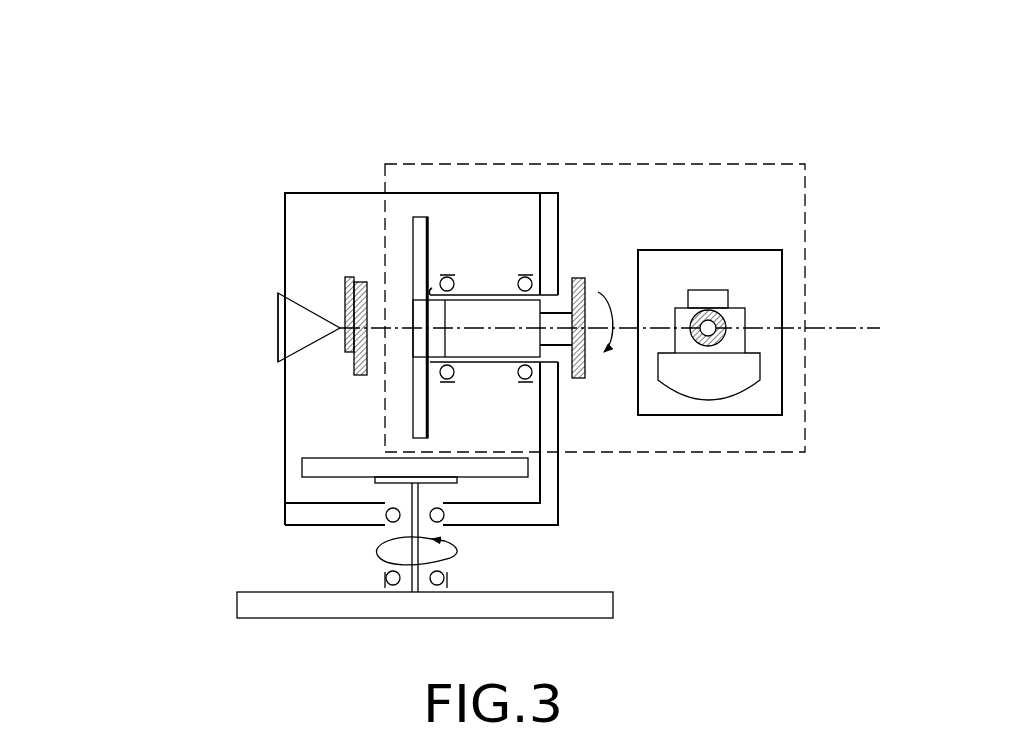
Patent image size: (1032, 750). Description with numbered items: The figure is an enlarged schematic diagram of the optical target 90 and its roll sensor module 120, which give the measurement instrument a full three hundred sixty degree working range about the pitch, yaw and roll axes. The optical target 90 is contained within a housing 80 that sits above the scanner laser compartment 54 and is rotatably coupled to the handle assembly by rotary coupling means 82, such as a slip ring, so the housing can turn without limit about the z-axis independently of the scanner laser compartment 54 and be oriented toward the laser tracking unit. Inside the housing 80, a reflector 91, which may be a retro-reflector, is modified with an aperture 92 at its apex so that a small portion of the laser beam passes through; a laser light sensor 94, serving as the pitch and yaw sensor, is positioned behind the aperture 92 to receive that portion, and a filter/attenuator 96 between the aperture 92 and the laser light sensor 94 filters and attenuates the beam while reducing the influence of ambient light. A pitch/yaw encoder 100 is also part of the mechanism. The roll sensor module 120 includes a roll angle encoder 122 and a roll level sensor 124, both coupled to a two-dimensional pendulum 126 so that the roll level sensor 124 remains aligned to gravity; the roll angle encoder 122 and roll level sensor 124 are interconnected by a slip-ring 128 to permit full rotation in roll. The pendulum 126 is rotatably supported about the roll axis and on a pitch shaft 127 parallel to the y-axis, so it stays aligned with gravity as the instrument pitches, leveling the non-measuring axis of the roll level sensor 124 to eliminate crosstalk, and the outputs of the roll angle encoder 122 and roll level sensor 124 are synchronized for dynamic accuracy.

The scanner laser compartment 54 is at (237, 600).
The housing 80 is at (520, 193).
The rotary coupling means 82 is at (500, 555).
The optical target 90 is at (178, 335).
The reflector 91 is at (277, 327).
The aperture 92 is at (340, 327).
The laser light sensor 94 is at (362, 282).
The filter/attenuator 96 is at (341, 322).
The pitch/yaw encoder 100 is at (310, 458).
The roll sensor module 120 is at (675, 164).
The roll angle encoder 122 is at (420, 217).
The roll level sensor 124 is at (728, 296).
The two-dimensional pendulum 126 is at (750, 382).
The pitch shaft 127 is at (748, 313).
The slip-ring 128 is at (497, 315).